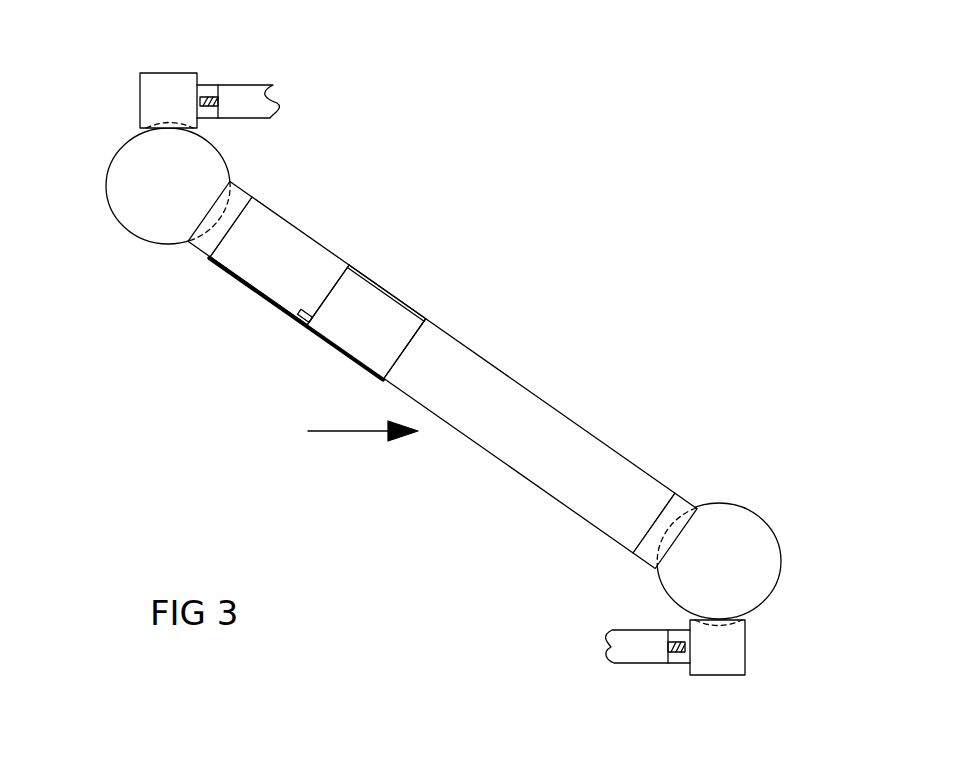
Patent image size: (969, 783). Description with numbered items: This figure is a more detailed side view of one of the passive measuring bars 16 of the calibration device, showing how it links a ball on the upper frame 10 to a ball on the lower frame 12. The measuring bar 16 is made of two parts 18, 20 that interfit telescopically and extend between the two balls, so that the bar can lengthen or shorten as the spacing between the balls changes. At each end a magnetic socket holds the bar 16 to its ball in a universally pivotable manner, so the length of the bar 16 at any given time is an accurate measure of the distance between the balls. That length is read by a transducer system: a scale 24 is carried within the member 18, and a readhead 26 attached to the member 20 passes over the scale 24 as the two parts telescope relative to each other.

The upper frame 10 is at (238, 94).
The lower frame 12 is at (637, 653).
The measuring bar 16 is at (359, 444).
The telescopic part 18 is at (330, 245).
The telescopic part 20 is at (585, 433).
The scale 24 is at (240, 282).
The readhead 26 is at (306, 307).